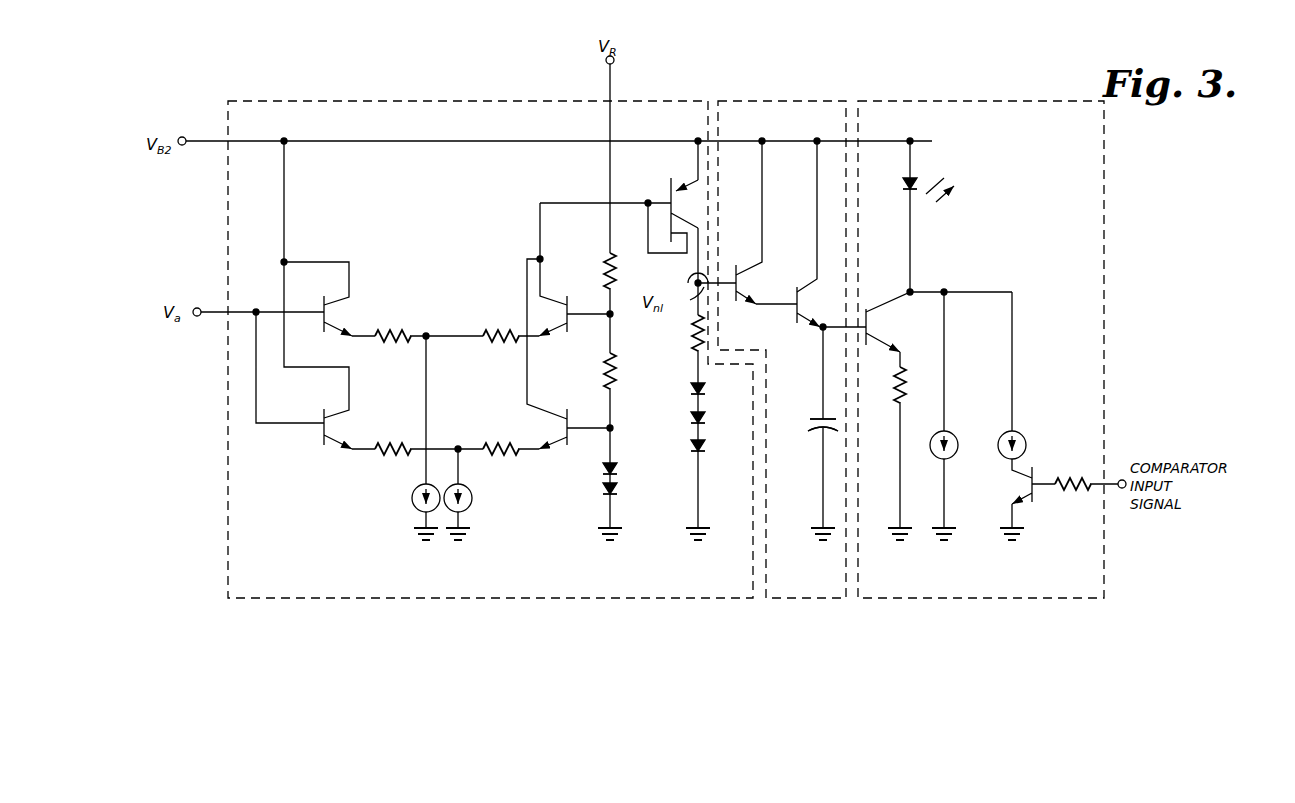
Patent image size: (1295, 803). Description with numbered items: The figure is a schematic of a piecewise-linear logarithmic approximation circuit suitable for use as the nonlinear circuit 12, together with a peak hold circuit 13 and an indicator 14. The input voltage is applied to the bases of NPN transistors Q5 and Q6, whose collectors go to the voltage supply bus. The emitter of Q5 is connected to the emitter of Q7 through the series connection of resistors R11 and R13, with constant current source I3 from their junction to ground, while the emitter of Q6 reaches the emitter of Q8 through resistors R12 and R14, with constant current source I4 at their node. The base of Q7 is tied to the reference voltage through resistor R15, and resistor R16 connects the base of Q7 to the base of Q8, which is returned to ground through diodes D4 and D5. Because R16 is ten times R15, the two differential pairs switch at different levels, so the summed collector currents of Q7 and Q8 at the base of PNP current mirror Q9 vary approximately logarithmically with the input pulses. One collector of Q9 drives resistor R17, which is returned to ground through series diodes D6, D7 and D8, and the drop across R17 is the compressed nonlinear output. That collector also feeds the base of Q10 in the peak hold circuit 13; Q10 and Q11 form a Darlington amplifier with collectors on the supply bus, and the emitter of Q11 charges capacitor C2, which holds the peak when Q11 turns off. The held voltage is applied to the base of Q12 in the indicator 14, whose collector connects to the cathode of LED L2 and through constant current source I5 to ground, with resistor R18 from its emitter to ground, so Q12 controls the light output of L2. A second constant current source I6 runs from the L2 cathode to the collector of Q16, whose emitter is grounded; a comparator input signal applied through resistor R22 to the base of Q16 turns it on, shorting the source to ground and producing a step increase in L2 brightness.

The nonlinear circuit 12 is at (470, 95).
The peak hold circuit 13 is at (781, 98).
The indicator 14 is at (968, 100).
The NPN transistor Q5 is at (325, 305).
The NPN transistor Q6 is at (325, 418).
The NPN transistor Q7 is at (556, 305).
The NPN transistor Q8 is at (554, 417).
The PNP transistor Q9 is at (680, 178).
The NPN transistor Q10 is at (738, 275).
The NPN transistor Q11 is at (799, 292).
The NPN transistor Q12 is at (880, 316).
The NPN transistor Q16 is at (1007, 485).
The resistor R11 is at (393, 326).
The resistor R12 is at (392, 439).
The resistor R13 is at (499, 326).
The resistor R14 is at (501, 439).
The resistor R15 is at (627, 271).
The resistor R16 is at (627, 371).
The resistor R17 is at (680, 333).
The resistor R18 is at (917, 385).
The resistor R22 is at (1072, 474).
The diode D4 is at (624, 469).
The diode D5 is at (624, 490).
The diode D6 is at (713, 390).
The diode D7 is at (713, 419).
The diode D8 is at (713, 447).
The LED L2 is at (913, 184).
The capacitor C2 is at (809, 426).
The constant current source I3 is at (412, 498).
The constant current source I4 is at (467, 498).
The constant current source I5 is at (933, 455).
The constant current source I6 is at (997, 445).